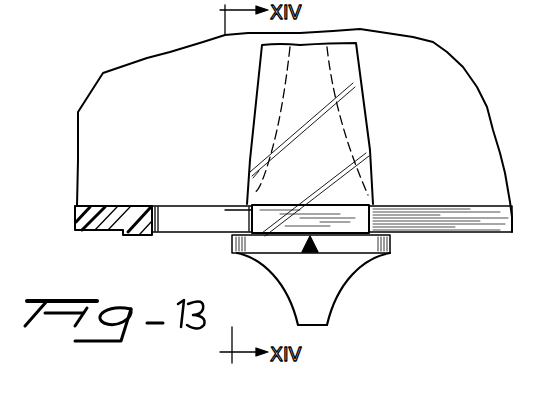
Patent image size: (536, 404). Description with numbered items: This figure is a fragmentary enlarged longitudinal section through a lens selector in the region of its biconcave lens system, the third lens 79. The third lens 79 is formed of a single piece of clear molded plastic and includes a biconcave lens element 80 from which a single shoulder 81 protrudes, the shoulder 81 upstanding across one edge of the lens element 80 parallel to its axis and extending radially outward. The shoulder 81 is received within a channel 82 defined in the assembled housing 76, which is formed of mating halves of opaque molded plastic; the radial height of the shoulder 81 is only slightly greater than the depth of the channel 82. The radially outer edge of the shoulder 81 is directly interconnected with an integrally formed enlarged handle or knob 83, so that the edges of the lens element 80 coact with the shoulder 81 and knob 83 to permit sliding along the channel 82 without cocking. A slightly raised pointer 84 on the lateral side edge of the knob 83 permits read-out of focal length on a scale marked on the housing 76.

The housing 76 is at (178, 108).
The third lens 79 is at (358, 103).
The biconcave lens element 80 is at (340, 173).
The shoulder 81 is at (360, 220).
The channel 82 is at (188, 218).
The knob 83 is at (330, 292).
The pointer 84 is at (307, 251).